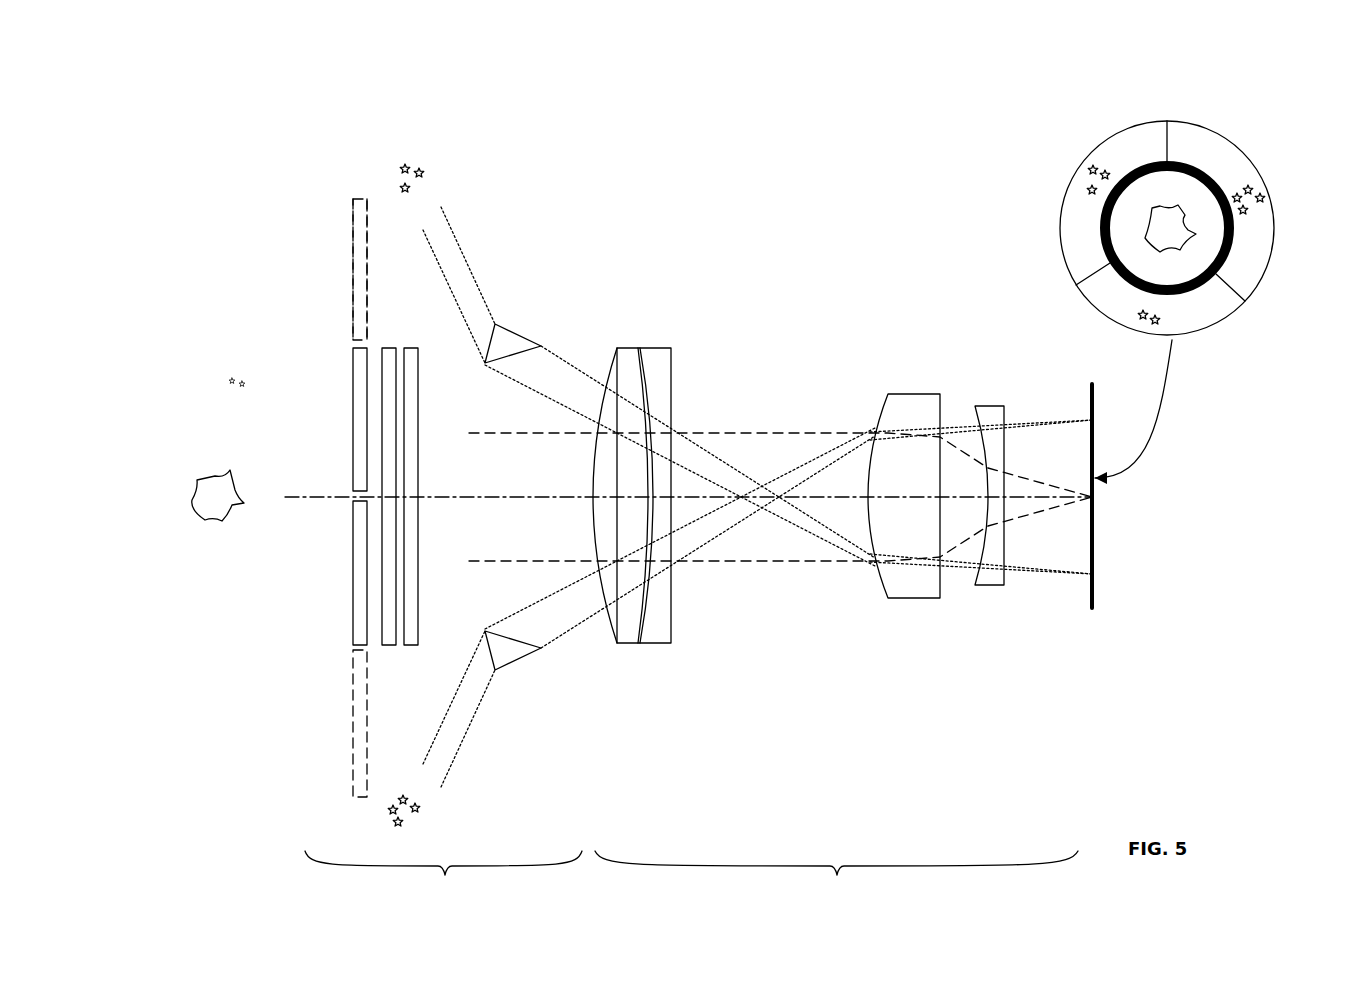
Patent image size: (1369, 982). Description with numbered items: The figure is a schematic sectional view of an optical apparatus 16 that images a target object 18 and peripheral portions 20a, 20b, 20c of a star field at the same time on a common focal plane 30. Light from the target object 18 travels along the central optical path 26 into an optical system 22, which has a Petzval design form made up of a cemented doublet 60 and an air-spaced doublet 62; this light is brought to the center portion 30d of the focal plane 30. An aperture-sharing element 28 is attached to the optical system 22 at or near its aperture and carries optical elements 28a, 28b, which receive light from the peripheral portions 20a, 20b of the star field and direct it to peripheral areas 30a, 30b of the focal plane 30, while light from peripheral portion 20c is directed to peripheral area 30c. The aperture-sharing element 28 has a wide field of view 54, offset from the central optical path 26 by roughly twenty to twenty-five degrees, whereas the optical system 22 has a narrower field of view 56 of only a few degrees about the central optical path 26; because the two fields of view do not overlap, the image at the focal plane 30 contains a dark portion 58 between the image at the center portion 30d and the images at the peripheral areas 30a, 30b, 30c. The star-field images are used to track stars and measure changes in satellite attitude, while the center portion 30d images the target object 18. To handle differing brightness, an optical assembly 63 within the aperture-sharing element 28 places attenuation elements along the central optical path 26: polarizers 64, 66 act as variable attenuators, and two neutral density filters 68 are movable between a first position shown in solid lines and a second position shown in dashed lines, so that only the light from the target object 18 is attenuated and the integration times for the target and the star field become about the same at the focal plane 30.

The optical apparatus 16 is at (788, 264).
The target object 18 is at (198, 480).
The peripheral portion of the star field 20a is at (453, 156).
The peripheral portion of the star field 20b is at (438, 817).
The peripheral portion of the star field 20c is at (228, 372).
The optical system 22 is at (836, 880).
The optical path 26 is at (320, 497).
The aperture-sharing element 28 is at (443, 880).
The optical element 28a is at (515, 335).
The optical element 28b is at (507, 659).
The focal plane 30 is at (1093, 553).
The peripheral portion of the focal plane 30a is at (1153, 138).
The peripheral portion of the focal plane 30b is at (1213, 148).
The peripheral portion of the focal plane 30c is at (1198, 317).
The center portion of the focal plane 30d is at (1168, 190).
The field of view of the aperture-sharing element 54 is at (462, 247).
The field of view of the optical system 56 is at (507, 432).
The dark portion 58 is at (1232, 253).
The cemented doublet 60 is at (638, 335).
The air-spaced doublet 62 is at (955, 370).
The optical assembly 63 is at (358, 178).
The polarizer 64 is at (389, 347).
The polarizer 66 is at (418, 366).
The neutral density filter 68 is at (353, 262).